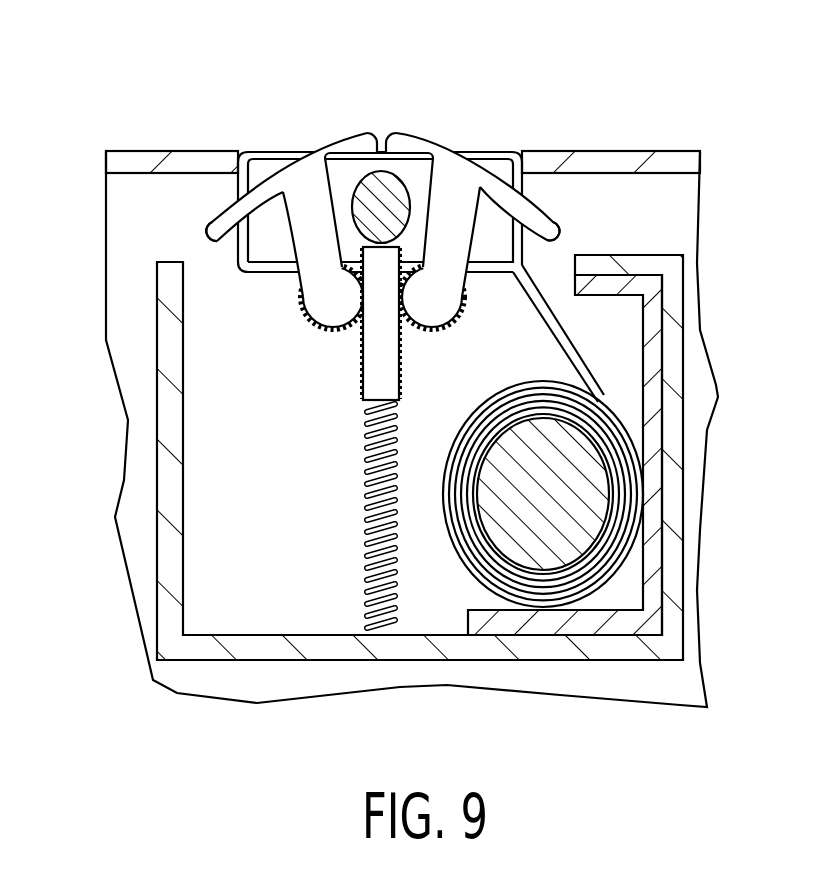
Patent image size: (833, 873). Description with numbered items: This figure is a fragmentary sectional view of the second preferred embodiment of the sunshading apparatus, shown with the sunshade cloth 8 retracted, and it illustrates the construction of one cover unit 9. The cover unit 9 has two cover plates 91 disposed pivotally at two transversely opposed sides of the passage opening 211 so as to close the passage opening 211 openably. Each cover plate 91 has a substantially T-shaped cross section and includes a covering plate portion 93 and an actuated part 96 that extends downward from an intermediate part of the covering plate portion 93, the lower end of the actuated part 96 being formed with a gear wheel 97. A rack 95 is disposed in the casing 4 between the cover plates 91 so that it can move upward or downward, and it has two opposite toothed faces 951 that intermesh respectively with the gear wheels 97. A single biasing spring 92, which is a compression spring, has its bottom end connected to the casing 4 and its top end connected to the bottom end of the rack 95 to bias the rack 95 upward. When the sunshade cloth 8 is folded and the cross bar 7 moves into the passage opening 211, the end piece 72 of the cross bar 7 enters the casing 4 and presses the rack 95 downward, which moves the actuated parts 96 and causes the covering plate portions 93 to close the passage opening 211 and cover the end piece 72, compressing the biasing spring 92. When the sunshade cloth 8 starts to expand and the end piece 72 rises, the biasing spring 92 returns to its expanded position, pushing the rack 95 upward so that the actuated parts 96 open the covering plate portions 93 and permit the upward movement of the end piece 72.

The casing 4 is at (152, 334).
The cross bar 7 is at (495, 145).
The sunshade cloth 8 is at (583, 362).
The cover unit 9 is at (467, 152).
The cover plate 91 is at (219, 198).
The covering plate portion 93 is at (263, 182).
The actuated part 96 is at (322, 206).
The gear wheel 97 is at (330, 293).
The end piece 72 is at (392, 200).
The rack 95 is at (256, 503).
The toothed face 951 is at (362, 348).
The biasing spring 92 is at (362, 544).
The passage opening 211 is at (541, 166).